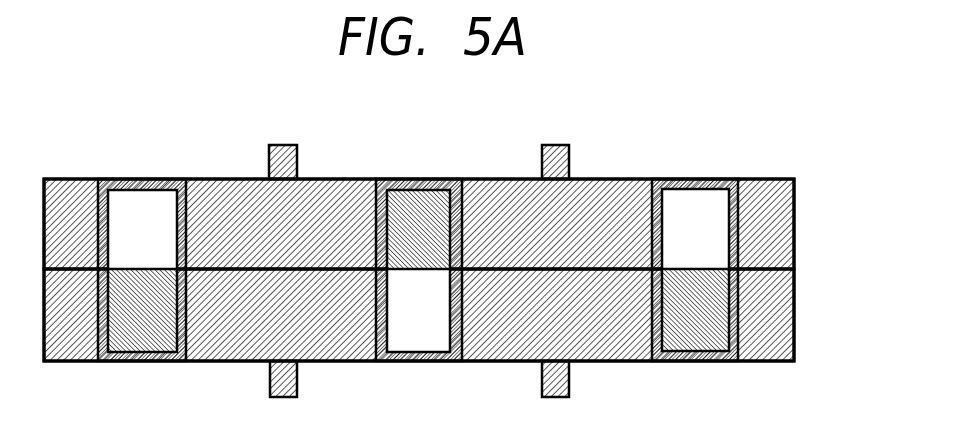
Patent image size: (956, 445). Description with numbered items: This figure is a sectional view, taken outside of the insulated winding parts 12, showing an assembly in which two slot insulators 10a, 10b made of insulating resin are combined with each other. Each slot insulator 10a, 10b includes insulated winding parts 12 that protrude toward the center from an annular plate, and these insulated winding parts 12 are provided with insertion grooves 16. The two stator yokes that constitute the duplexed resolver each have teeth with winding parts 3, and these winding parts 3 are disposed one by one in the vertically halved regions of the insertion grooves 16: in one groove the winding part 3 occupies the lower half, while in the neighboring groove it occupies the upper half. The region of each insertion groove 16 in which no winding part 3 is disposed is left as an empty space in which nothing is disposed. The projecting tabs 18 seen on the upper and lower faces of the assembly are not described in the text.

The slot insulator 10a is at (796, 194).
The slot insulator 10b is at (796, 288).
The projection 18 is at (553, 145).
The insulated winding part 12 is at (735, 193).
The insertion groove 16 is at (687, 202).
The winding part 3 is at (725, 335).